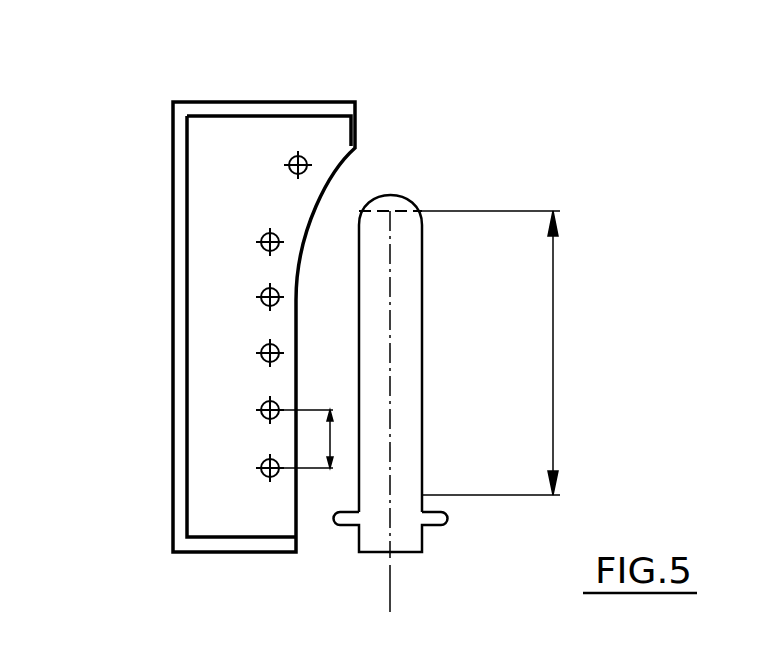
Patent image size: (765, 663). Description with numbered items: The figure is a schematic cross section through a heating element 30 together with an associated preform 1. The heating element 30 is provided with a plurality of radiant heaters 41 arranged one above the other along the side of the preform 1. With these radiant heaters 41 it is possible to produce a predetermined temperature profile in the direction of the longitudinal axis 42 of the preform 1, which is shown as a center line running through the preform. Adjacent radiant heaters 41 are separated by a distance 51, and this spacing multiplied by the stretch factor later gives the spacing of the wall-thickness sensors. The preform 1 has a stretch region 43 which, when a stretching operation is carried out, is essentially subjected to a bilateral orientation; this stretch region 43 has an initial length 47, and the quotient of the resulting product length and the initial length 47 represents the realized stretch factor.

The preform 1 is at (422, 280).
The heating element 30 is at (173, 400).
The radiant heaters 41 is at (297, 156).
The longitudinal axis 42 is at (390, 587).
The stretch region 43 is at (565, 297).
The initial length 47 is at (553, 378).
The distance between the radiant heaters 51 is at (330, 440).